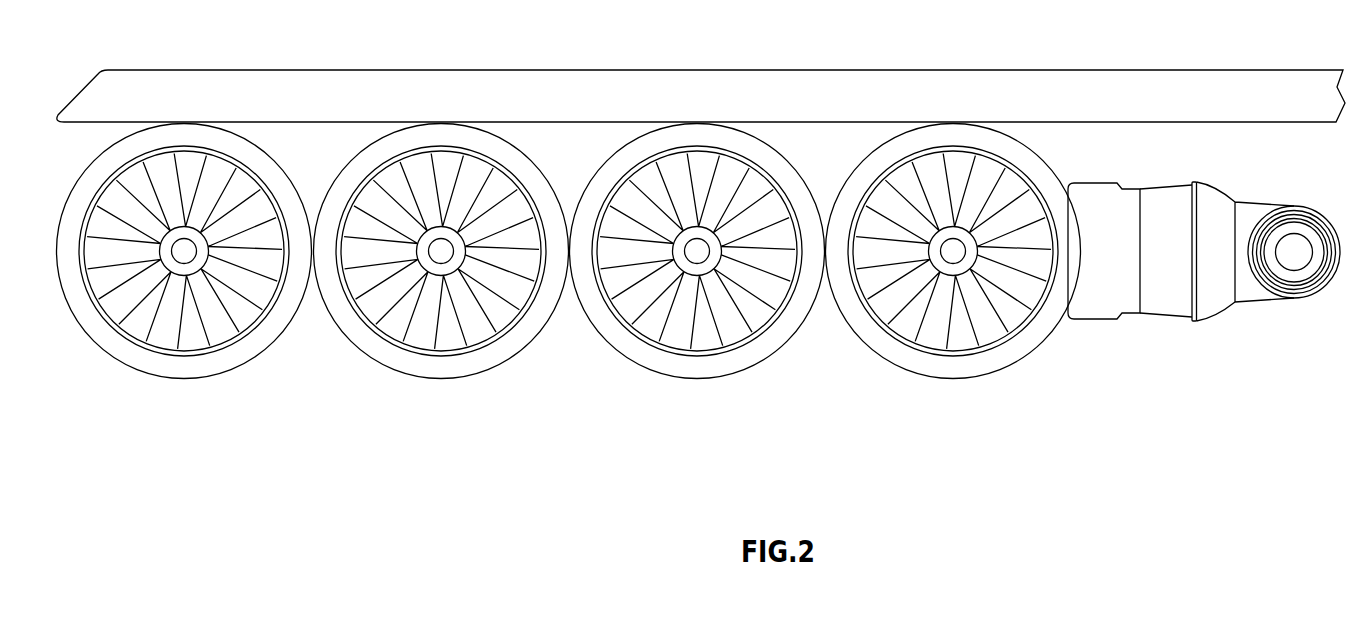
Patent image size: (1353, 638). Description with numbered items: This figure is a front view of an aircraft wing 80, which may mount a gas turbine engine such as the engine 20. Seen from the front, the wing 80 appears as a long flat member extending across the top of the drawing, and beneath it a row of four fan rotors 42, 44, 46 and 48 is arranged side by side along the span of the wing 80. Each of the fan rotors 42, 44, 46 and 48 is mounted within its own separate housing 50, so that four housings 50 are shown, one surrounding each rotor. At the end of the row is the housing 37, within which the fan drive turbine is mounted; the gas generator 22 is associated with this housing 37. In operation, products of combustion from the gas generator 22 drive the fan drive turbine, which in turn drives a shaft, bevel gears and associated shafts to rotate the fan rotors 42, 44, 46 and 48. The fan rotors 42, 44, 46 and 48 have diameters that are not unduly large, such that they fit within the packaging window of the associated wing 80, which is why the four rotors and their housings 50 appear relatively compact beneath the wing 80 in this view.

The engine 20 is at (1270, 168).
The gas generator 22 is at (1297, 255).
The housing 37 is at (1143, 316).
The fan rotor 42 is at (907, 181).
The fan rotor 44 is at (651, 181).
The fan rotor 46 is at (395, 181).
The fan rotor 48 is at (138, 181).
The housings 50 is at (160, 363).
The aircraft wing 80 is at (958, 91).